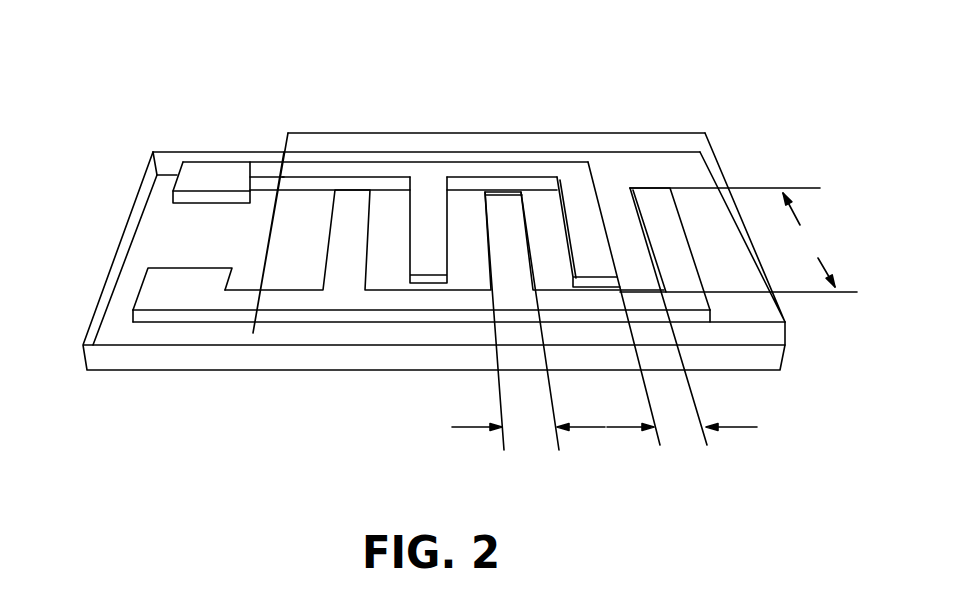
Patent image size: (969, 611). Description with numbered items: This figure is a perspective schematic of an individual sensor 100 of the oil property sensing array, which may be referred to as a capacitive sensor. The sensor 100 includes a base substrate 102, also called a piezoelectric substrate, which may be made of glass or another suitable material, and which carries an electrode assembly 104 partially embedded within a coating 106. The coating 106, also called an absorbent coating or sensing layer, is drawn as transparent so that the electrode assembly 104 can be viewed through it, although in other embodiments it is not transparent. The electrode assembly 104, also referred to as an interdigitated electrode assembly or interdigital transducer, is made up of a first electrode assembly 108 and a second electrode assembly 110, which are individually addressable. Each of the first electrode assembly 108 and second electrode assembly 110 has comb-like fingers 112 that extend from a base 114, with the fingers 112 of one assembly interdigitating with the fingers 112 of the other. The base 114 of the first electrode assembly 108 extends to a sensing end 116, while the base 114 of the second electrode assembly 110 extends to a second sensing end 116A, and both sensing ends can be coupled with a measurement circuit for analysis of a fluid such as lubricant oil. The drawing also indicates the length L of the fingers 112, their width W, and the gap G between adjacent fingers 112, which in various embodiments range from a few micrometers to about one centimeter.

The sensor 100 is at (500, 97).
The base substrate 102 is at (762, 357).
The electrode assembly 104 is at (678, 205).
The coating 106 is at (687, 172).
The first electrode assembly 108 is at (378, 160).
The second electrode assembly 110 is at (357, 326).
The fingers 112 is at (432, 247).
The base 114 is at (312, 304).
The sensing end 116 is at (178, 293).
The second sensing end 116A is at (218, 175).